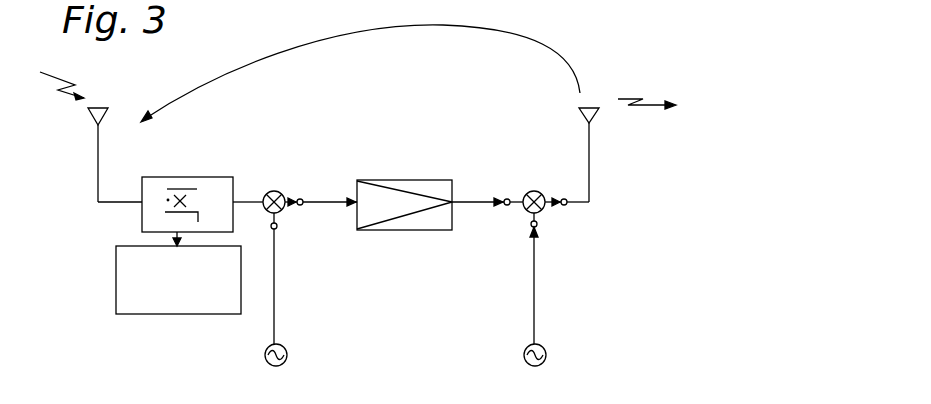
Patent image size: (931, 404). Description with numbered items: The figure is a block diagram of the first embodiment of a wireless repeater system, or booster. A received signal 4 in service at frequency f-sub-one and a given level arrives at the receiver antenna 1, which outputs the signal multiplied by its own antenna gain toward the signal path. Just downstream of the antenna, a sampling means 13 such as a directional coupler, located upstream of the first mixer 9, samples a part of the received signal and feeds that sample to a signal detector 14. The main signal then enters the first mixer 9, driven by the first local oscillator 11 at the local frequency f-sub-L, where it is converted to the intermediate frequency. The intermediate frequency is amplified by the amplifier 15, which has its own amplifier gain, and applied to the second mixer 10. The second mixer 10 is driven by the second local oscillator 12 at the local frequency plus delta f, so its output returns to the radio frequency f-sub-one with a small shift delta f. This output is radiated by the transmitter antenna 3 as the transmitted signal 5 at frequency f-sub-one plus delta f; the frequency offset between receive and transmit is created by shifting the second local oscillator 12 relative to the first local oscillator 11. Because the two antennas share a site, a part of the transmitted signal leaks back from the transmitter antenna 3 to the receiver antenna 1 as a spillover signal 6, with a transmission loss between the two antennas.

The receiver antenna 1 is at (115, 144).
The transmitter antenna 3 is at (592, 144).
The received signal 4 is at (62, 87).
The transmitted signal 5 is at (649, 104).
The spillover signal 6 is at (360, 62).
The first mixer 9 is at (283, 197).
The second mixer 10 is at (538, 196).
The first local oscillator 11 is at (289, 312).
The second local oscillator 12 is at (545, 311).
The sampling means 13 is at (212, 177).
The signal detector 14 is at (116, 274).
The amplifier 15 is at (408, 180).